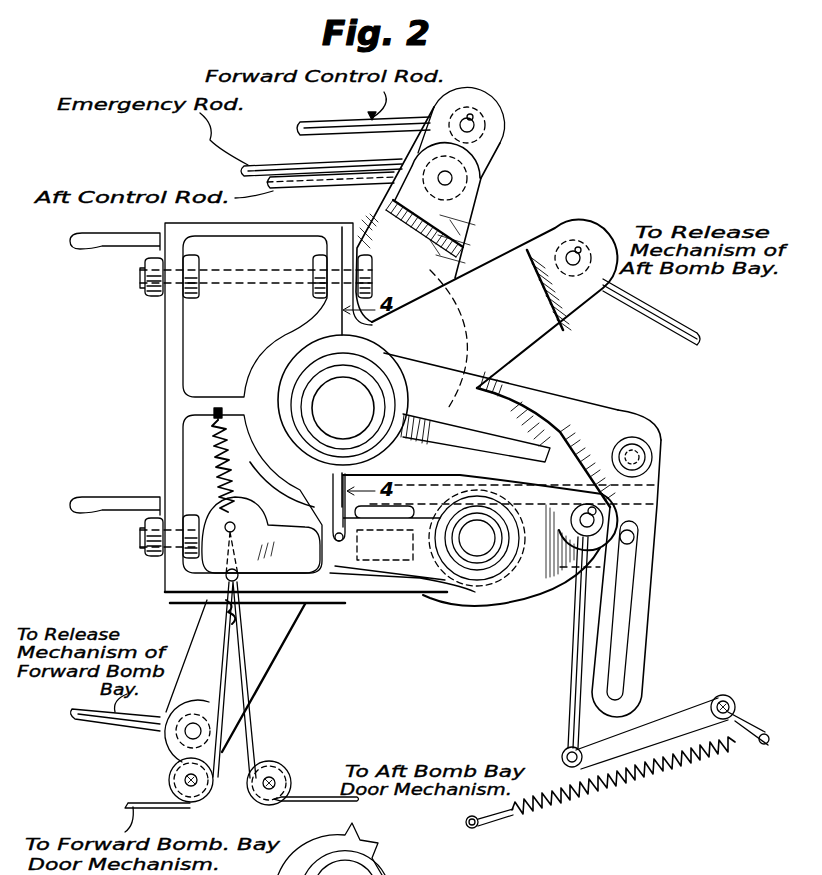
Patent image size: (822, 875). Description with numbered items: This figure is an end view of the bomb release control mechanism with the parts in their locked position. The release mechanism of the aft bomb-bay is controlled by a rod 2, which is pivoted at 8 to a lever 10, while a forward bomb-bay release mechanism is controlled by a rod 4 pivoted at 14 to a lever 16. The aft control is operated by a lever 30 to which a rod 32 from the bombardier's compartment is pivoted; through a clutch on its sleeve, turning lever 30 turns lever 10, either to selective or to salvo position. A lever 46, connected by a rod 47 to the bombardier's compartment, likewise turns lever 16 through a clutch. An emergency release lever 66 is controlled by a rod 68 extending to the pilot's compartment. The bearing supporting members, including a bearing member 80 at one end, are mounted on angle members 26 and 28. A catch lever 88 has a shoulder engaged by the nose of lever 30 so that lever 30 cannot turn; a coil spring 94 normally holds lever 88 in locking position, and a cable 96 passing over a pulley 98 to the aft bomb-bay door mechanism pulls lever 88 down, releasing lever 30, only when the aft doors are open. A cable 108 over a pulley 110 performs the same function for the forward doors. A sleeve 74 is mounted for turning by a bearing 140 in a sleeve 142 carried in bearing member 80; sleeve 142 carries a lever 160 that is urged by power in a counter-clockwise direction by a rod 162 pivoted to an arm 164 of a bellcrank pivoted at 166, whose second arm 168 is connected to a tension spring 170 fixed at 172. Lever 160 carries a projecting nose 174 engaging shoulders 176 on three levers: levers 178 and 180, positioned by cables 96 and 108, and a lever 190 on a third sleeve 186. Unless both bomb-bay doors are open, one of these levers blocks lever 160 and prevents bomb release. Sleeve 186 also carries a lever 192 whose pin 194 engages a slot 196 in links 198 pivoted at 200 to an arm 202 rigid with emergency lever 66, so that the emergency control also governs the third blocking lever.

The aft release rod 2 is at (668, 336).
The forward release rod 4 is at (120, 726).
The pivot 8 is at (573, 260).
The lever 10 is at (537, 333).
The pivot 14 is at (188, 736).
The lever 16 is at (274, 672).
The angle member 26 is at (128, 236).
The angle member 28 is at (127, 497).
The lever 30 is at (471, 240).
The rod 32 is at (306, 186).
The lever 46 is at (488, 150).
The rod 47 is at (355, 133).
The emergency release lever 66 is at (359, 198).
The rod 68 is at (252, 167).
The sleeve 74 is at (369, 399).
The bearing member 80 is at (288, 230).
The catch lever 88 is at (359, 604).
The coil spring 94 is at (213, 449).
The cable 96 is at (317, 794).
The pulley 98 is at (281, 806).
The cable 108 is at (163, 798).
The pulley 110 is at (200, 792).
The bearing 140 is at (371, 372).
The sleeve 142 is at (394, 382).
The lever 160 is at (548, 410).
The rod 162 is at (571, 725).
The arm 164 is at (680, 717).
The pivot 166 is at (728, 701).
The second arm 168 is at (748, 722).
The tension spring 170 is at (636, 784).
The fixed point 172 is at (479, 827).
The projecting nose 174 is at (317, 507).
The shoulder 176 is at (366, 548).
The lever 178 is at (464, 604).
The lever 180 is at (509, 596).
The third sleeve 186 is at (477, 563).
The lever 190 is at (419, 604).
The lever 192 is at (573, 567).
The pin 194 is at (633, 538).
The slot 196 is at (622, 614).
The links 198 is at (650, 497).
The pivot 200 is at (641, 454).
The arm 202 is at (606, 427).